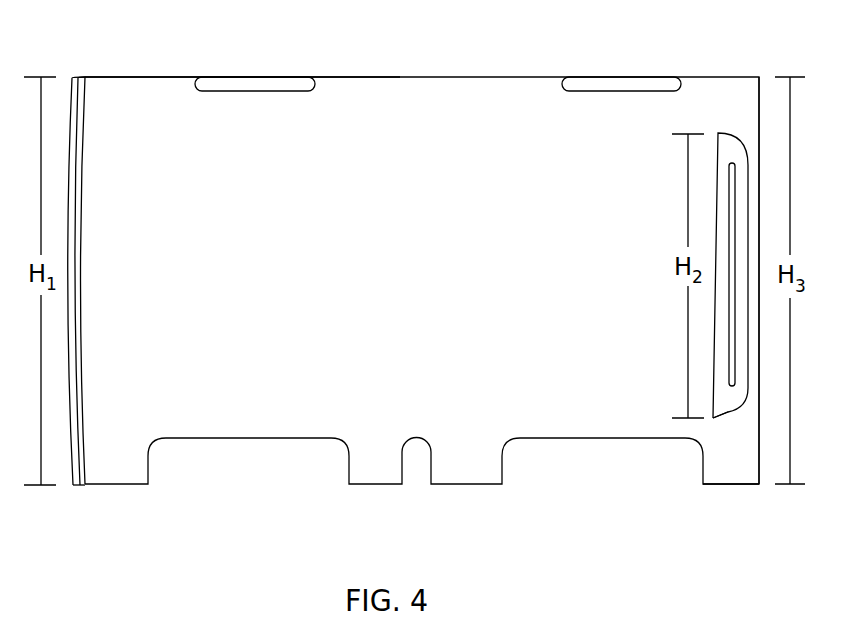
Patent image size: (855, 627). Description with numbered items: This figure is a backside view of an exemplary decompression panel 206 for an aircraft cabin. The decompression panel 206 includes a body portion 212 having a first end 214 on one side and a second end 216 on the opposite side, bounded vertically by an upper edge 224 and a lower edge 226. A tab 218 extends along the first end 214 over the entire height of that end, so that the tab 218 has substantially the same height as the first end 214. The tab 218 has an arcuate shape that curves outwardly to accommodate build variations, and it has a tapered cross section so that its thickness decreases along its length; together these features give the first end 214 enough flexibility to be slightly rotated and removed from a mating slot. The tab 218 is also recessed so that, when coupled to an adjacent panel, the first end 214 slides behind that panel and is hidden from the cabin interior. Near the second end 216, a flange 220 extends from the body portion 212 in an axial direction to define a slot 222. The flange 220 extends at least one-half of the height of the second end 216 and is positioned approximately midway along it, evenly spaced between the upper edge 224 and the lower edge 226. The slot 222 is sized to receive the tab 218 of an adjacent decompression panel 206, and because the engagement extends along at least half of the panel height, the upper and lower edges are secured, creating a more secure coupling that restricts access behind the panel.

The decompression panel 206 is at (540, 45).
The body portion 212 is at (143, 90).
The first end 214 is at (173, 46).
The second end 216 is at (711, 60).
The tab 218 is at (76, 484).
The flange 220 is at (728, 402).
The slot 222 is at (712, 130).
The upper edge 224 is at (448, 77).
The lower edge 226 is at (725, 484).